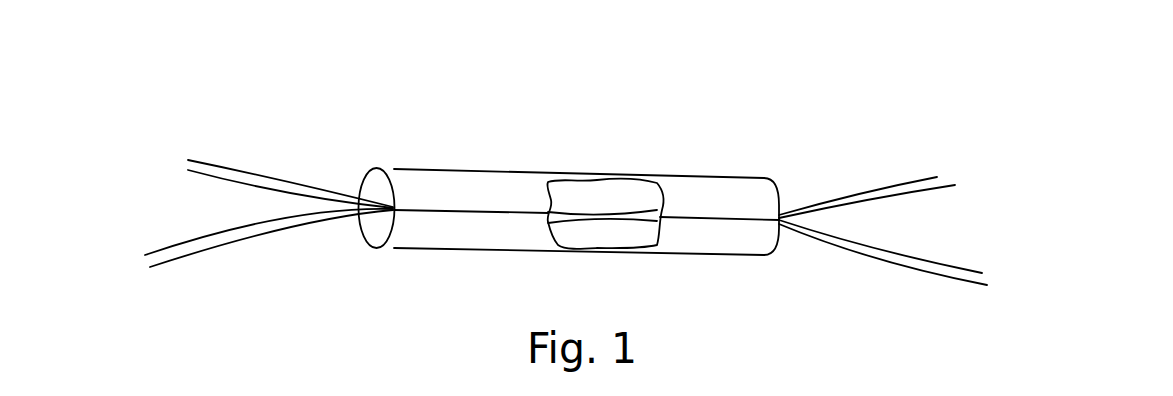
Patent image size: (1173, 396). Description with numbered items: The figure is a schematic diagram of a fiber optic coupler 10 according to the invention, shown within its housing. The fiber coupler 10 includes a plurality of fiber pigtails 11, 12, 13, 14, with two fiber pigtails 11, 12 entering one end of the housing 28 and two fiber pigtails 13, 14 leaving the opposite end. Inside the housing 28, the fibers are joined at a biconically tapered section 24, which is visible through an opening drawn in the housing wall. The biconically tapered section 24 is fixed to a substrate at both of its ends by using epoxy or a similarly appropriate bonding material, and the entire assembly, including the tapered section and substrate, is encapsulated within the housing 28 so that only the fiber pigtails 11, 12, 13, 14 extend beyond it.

The fiber optic coupler 10 is at (630, 113).
The fiber pigtail 11 is at (267, 178).
The fiber pigtail 12 is at (257, 236).
The fiber pigtail 13 is at (870, 190).
The fiber pigtail 14 is at (847, 242).
The biconically tapered section 24 is at (607, 228).
The housing 28 is at (709, 176).